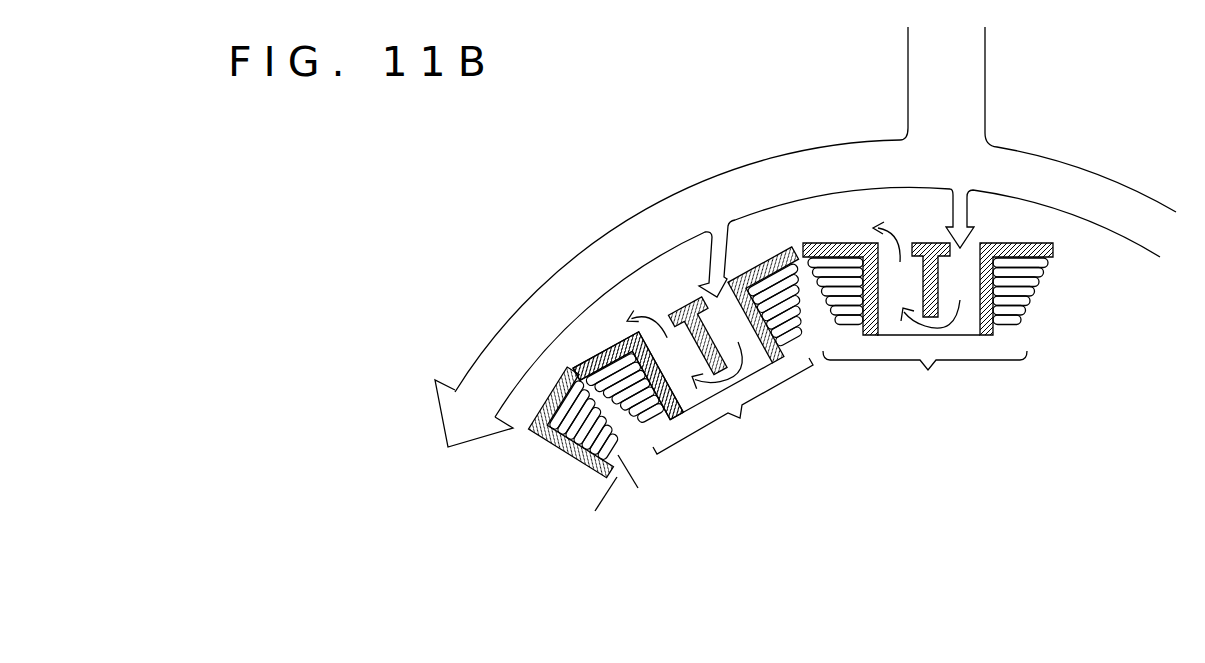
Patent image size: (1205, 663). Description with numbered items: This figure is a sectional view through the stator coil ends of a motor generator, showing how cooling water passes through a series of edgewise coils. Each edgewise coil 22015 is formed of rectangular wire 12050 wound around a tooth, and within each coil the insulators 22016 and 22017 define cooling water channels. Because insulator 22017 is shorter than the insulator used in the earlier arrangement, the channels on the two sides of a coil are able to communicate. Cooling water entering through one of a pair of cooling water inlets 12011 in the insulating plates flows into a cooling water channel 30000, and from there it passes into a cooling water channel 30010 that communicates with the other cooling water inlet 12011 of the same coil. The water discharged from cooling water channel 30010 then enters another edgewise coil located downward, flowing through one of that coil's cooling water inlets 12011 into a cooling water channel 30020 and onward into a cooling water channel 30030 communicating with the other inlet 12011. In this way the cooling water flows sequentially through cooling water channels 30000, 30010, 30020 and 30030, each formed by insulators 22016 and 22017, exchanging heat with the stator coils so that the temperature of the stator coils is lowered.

The cooling water inlet 12011 is at (640, 318).
The rectangular wire 12050 is at (653, 412).
The edgewise coil 22015 is at (813, 349).
The insulator 22016 is at (970, 322).
The insulator 22017 is at (940, 316).
The cooling water channel 30000 is at (958, 320).
The cooling water channel 30010 is at (903, 283).
The cooling water channel 30020 is at (760, 357).
The cooling water channel 30030 is at (660, 328).